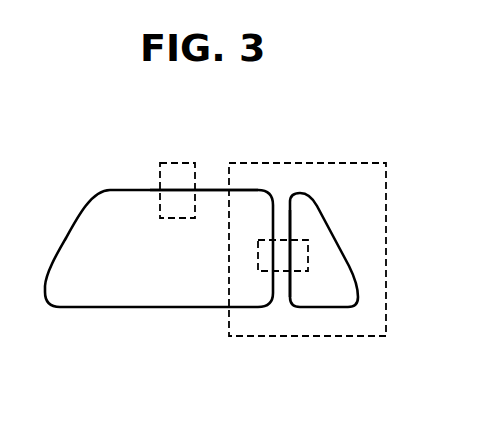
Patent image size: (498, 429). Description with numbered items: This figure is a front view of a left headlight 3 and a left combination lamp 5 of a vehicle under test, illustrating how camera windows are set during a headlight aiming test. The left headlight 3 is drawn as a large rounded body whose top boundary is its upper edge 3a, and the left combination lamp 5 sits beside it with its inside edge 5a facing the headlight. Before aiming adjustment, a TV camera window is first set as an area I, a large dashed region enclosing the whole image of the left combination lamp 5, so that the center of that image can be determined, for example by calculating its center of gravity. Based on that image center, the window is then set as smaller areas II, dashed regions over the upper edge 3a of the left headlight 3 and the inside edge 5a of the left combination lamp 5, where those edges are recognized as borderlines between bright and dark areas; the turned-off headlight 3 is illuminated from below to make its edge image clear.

The left headlight 3 is at (160, 282).
The upper edge of left headlight 3a is at (210, 190).
The left combination lamp 5 is at (345, 270).
The inside edge of left combination lamp 5a is at (290, 253).
The area I is at (385, 163).
The areas II is at (181, 163).